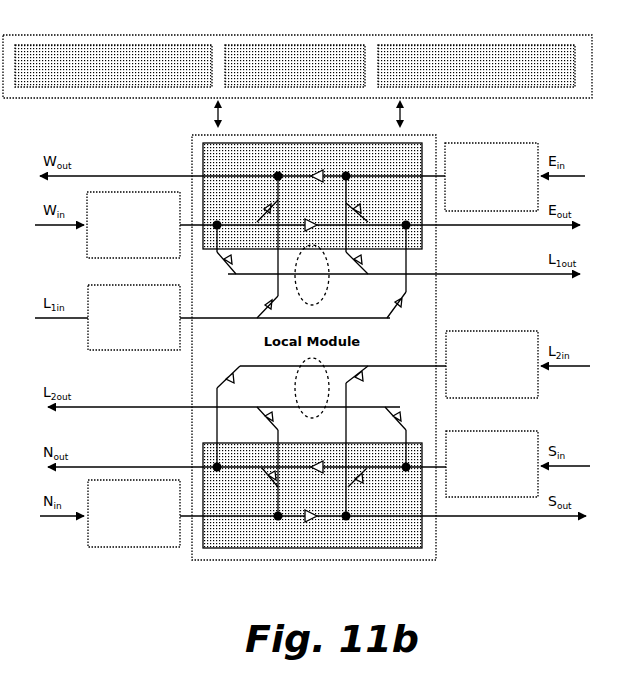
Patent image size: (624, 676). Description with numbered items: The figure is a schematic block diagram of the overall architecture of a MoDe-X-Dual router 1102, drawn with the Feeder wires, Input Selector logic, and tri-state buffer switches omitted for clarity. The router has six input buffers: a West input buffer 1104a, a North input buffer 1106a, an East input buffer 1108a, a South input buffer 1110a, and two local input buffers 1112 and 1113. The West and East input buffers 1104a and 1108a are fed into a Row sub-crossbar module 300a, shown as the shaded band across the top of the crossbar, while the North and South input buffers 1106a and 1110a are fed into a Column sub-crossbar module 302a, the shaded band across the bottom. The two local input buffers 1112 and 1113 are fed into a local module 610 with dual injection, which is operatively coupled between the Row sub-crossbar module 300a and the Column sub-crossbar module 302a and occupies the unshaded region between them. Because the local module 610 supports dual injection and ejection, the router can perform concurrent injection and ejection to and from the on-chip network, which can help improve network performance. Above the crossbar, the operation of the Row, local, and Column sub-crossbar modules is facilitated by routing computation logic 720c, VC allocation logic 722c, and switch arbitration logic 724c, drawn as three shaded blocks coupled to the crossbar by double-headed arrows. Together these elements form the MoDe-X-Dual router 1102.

The routing computation logic 720c is at (183, 52).
The VC allocation logic 722c is at (352, 48).
The switch arbitration logic 724c is at (510, 50).
The Row sub-crossbar module 300a is at (240, 150).
The Column sub-crossbar module 302a is at (395, 537).
The local module 610 is at (432, 320).
The West input buffer 1104a is at (97, 238).
The local input buffer 1112 is at (125, 340).
The North input buffer 1106a is at (118, 538).
The East input buffer 1108a is at (515, 150).
The local input buffer 1113 is at (520, 331).
The South input buffer 1110a is at (510, 438).
The MoDe-X-Dual router 1102 is at (510, 587).